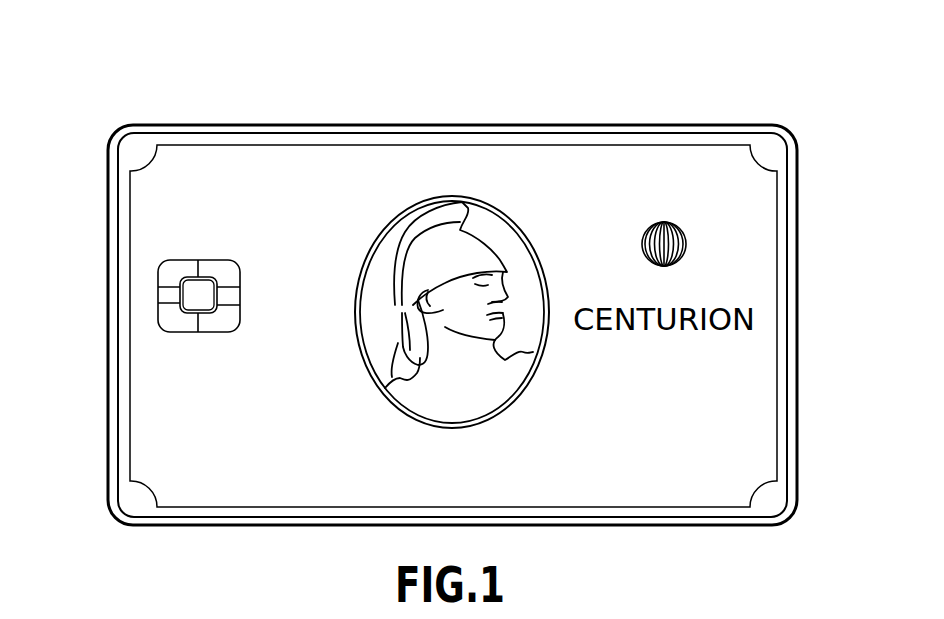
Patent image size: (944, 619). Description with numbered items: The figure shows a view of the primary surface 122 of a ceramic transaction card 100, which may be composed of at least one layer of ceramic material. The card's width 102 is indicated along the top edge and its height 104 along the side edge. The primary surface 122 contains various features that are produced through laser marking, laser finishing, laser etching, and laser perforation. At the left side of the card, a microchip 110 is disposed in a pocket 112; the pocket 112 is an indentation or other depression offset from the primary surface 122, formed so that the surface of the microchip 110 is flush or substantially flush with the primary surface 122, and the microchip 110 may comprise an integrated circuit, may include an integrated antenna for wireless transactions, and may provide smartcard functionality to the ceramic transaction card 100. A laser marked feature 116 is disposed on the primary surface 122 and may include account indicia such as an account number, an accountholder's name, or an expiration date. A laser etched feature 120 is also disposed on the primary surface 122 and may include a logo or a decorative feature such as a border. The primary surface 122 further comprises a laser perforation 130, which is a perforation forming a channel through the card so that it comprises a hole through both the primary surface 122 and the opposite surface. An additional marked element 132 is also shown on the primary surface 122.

The ceramic transaction card 100 is at (129, 80).
The width 102 is at (792, 117).
The height 104 is at (801, 125).
The microchip 110 is at (187, 290).
The pocket 112 is at (141, 296).
The laser marked feature 116 is at (185, 450).
The laser etched feature 120 is at (412, 240).
The primary surface 122 is at (724, 163).
The laser perforation 130 is at (662, 222).
The issuer name text 132 is at (537, 160).